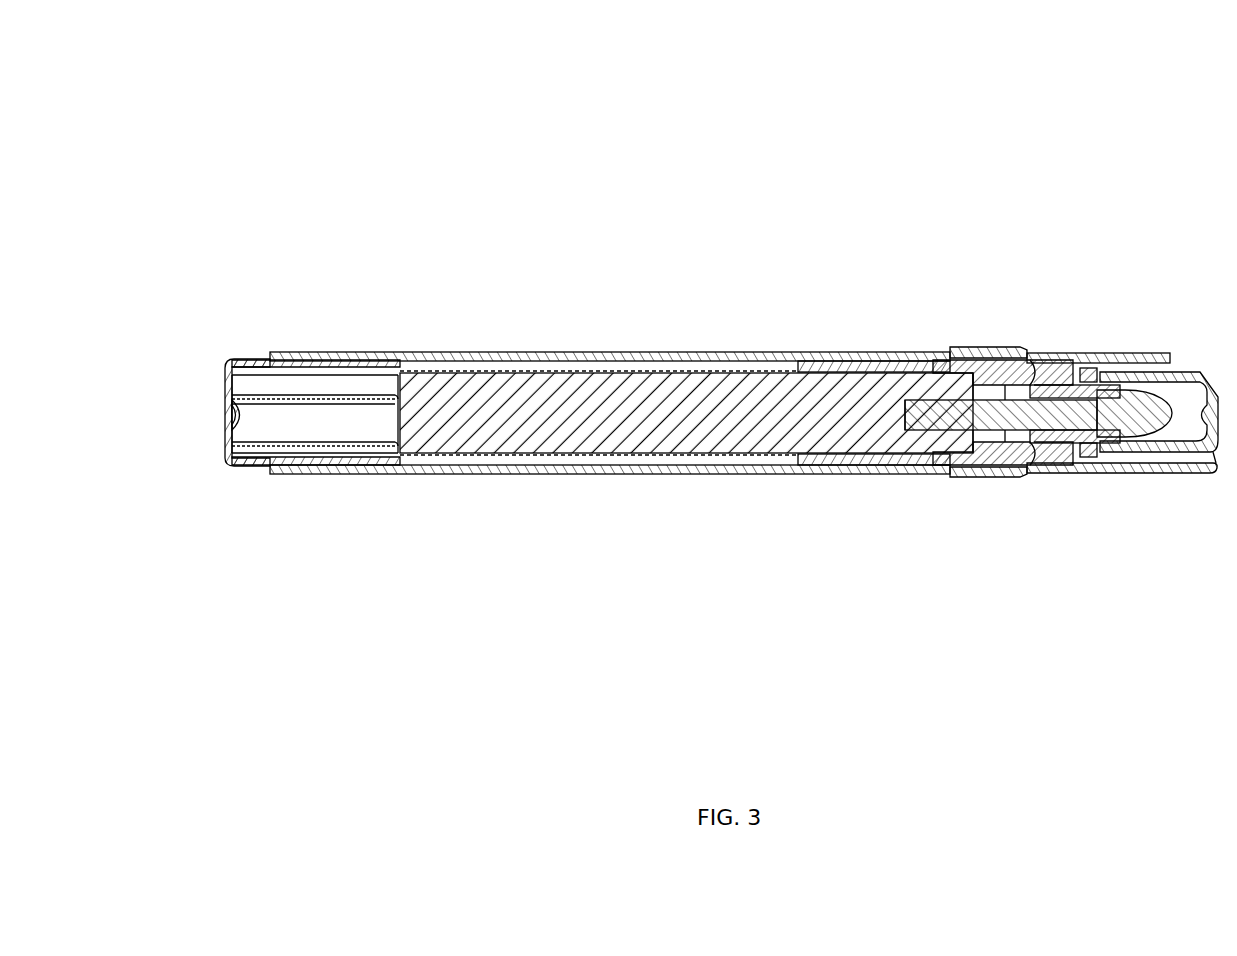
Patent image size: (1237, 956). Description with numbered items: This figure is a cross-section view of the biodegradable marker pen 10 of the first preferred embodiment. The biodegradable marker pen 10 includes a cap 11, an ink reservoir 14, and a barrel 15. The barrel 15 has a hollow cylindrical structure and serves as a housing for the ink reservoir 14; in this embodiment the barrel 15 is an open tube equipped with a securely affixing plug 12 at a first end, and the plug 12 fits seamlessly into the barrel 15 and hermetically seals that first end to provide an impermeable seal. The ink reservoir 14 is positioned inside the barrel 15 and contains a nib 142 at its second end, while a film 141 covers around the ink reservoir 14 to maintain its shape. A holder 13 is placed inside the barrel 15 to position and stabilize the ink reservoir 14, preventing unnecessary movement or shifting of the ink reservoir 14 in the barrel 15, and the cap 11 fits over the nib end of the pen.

The biodegradable marker pen 10 is at (386, 264).
The cap 11 is at (1055, 354).
The plug 12 is at (240, 464).
The holder 13 is at (940, 354).
The ink reservoir 14 is at (707, 430).
The film 141 is at (630, 372).
The nib 142 is at (1062, 448).
The barrel 15 is at (598, 473).